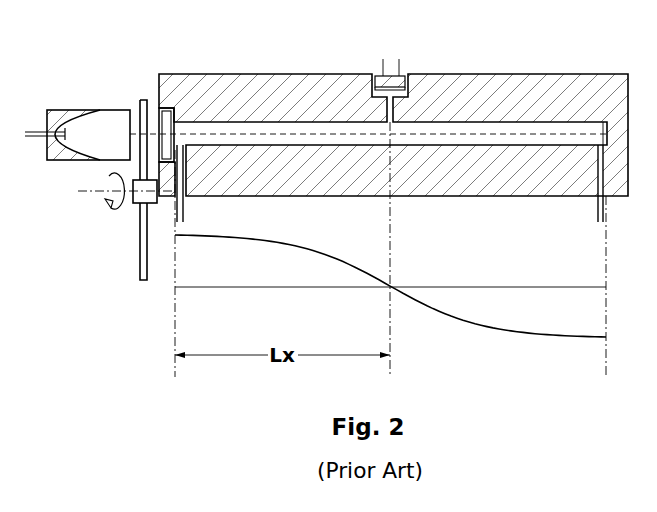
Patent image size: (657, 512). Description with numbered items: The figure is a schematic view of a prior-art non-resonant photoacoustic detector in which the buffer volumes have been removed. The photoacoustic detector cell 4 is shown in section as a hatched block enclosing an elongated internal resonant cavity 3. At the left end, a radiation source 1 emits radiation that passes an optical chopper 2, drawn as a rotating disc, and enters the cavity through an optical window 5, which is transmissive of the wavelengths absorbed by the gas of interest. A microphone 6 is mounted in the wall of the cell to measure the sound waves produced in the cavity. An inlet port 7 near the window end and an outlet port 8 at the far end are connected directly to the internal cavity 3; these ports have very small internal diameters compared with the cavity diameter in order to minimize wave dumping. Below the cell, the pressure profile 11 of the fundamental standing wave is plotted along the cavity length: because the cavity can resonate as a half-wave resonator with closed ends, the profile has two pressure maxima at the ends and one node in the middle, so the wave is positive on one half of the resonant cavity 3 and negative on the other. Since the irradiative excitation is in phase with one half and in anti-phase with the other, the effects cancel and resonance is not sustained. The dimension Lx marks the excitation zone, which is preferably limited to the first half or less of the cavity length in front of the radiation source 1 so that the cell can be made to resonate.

The radiation source 1 is at (68, 115).
The optical chopper 2 is at (142, 247).
The resonant cavity 3 is at (480, 128).
The photoacoustic detector cell 4 is at (205, 74).
The optical window 5 is at (157, 108).
The microphone 6 is at (400, 84).
The inlet port 7 is at (190, 205).
The outlet port 8 is at (596, 202).
The pressure profile 11 is at (438, 315).